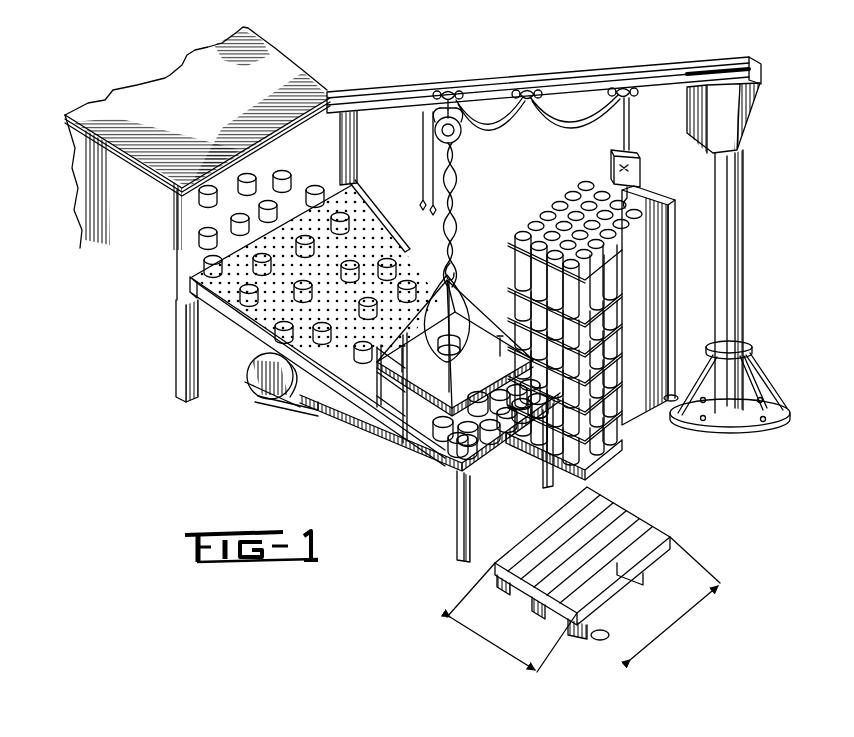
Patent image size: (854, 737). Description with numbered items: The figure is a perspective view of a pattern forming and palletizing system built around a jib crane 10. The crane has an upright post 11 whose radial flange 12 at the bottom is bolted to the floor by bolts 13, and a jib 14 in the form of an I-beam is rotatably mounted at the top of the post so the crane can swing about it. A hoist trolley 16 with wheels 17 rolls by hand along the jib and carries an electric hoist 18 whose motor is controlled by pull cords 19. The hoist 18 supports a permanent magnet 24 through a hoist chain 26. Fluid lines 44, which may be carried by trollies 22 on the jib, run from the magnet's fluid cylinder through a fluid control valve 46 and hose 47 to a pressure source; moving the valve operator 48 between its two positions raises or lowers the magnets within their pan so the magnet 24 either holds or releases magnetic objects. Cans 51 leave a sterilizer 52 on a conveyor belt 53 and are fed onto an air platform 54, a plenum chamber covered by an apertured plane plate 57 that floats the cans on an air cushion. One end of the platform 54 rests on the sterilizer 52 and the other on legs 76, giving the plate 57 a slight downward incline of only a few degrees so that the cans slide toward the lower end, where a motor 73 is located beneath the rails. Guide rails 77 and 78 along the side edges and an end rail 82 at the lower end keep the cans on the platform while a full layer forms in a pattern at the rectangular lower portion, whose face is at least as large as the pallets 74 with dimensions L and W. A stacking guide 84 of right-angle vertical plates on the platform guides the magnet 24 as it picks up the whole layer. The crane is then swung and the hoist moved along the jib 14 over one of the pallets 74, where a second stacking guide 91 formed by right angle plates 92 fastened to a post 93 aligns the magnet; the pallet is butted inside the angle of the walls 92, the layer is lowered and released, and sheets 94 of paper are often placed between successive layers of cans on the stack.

The jib crane 10 is at (735, 277).
The upright post 11 is at (745, 268).
The radial flange 12 is at (722, 425).
The bolts 13 is at (703, 421).
The jib 14 is at (390, 85).
The hoist trolley 16 is at (458, 100).
The wheels 17 is at (438, 92).
The electric hoist 18 is at (458, 140).
The pull cords 19 is at (428, 158).
The trollies 22 is at (628, 88).
The permanent magnet 24 is at (440, 398).
The hoist chain 26 is at (447, 226).
The fluid lines 44 is at (577, 128).
The fluid control valve 46 is at (640, 162).
The hose 47 is at (610, 185).
The valve operator 48 is at (617, 158).
The cans 51 is at (247, 175).
The sterilizer 52 is at (290, 50).
The conveyor belt 53 is at (193, 258).
The air platform 54 is at (258, 330).
The plane plate 57 is at (380, 237).
The motor 73 is at (275, 398).
The pallets 74 is at (597, 455).
The legs 76 is at (474, 516).
The guide rail 77 is at (372, 203).
The guide rail 78 is at (445, 470).
The end rail 82 is at (490, 460).
The stacking guide 84 is at (373, 367).
The stacking guide 91 is at (677, 300).
The right angle plates 92 is at (665, 205).
The post 93 is at (738, 348).
The sheets 94 is at (512, 252).